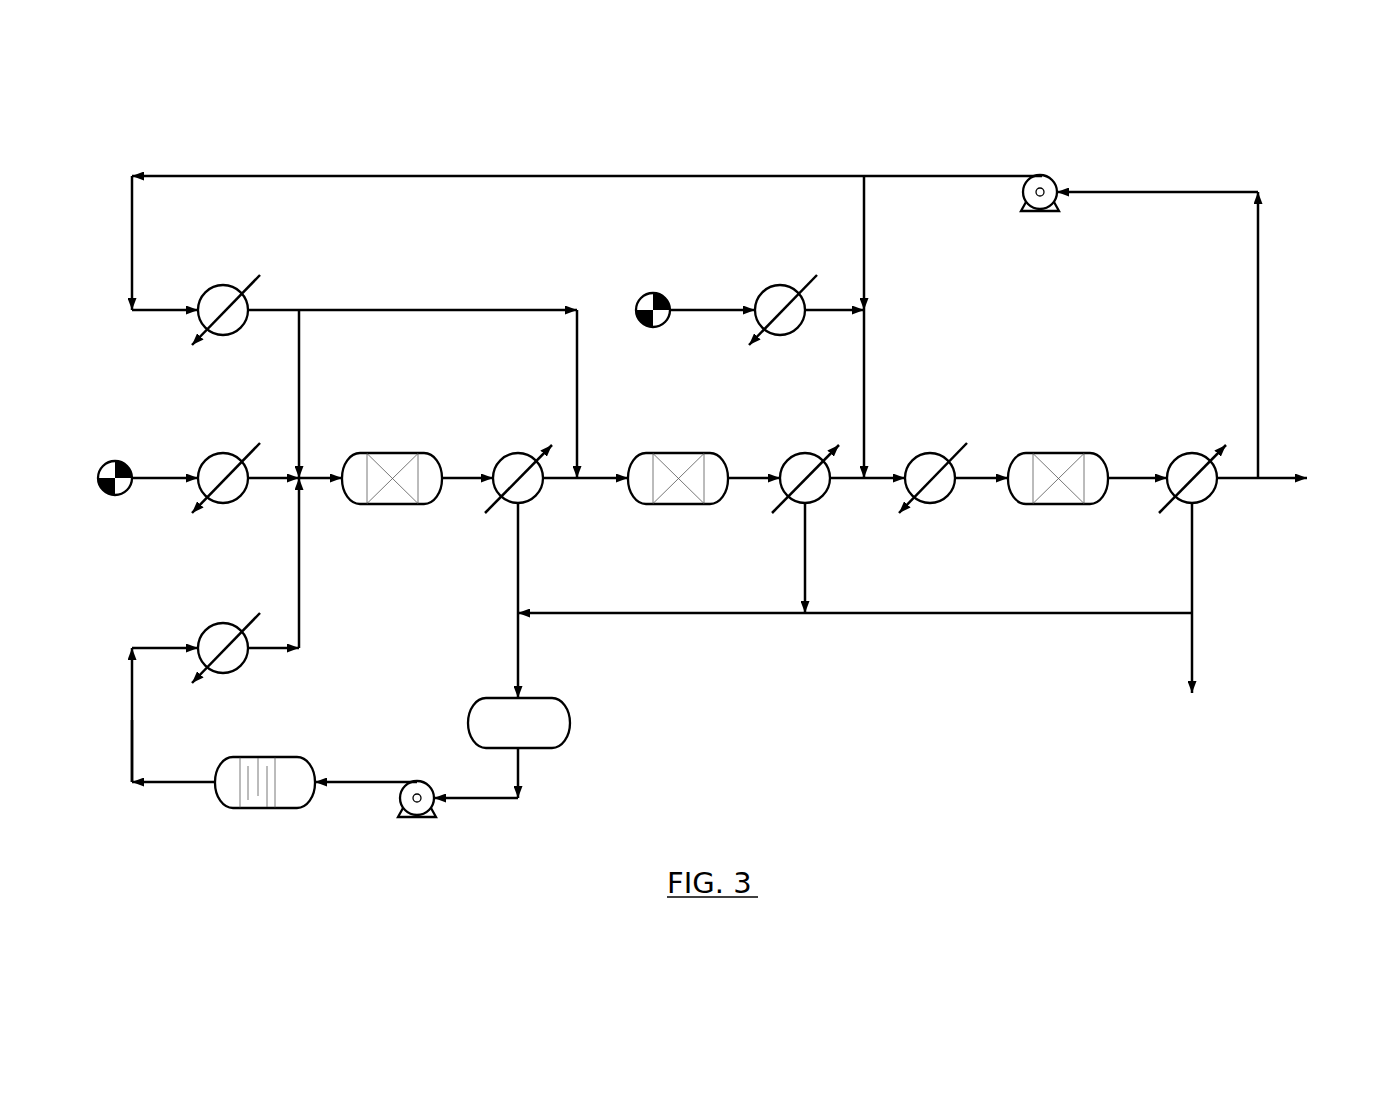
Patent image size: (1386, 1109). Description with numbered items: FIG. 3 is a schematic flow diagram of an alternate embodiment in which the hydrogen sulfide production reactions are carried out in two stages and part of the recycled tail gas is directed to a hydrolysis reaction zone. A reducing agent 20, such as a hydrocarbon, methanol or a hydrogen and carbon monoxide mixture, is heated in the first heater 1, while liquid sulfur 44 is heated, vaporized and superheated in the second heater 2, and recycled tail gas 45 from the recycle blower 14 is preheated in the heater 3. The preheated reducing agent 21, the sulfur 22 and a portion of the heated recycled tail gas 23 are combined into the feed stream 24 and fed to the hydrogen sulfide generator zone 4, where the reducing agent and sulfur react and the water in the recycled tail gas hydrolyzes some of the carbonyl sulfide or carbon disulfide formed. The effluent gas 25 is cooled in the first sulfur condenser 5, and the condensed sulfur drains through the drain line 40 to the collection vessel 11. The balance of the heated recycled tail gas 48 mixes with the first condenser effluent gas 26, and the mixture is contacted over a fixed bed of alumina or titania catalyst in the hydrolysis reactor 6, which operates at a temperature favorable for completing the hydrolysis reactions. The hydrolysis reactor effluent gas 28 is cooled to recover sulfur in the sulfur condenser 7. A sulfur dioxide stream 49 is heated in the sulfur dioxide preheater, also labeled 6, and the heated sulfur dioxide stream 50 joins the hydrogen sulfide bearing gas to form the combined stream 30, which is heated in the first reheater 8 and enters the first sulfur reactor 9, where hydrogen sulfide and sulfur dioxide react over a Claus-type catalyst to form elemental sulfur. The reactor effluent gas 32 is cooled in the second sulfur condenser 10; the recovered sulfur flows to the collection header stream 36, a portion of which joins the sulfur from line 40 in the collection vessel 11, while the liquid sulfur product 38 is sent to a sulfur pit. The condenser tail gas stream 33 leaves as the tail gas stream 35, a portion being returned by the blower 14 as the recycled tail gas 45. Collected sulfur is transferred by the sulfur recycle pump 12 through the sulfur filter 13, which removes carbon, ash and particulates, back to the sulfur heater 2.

The first heater 1 is at (203, 454).
The second heater 2 is at (204, 625).
The third heater 3 is at (204, 287).
The H2S generator zone 4 is at (357, 451).
The No. 1 sulfur condenser 5 is at (498, 457).
The hydrolysis reactor 6 is at (643, 450).
The sulfur condenser 7 is at (785, 457).
The No. 1 reheater 8 is at (910, 457).
The No. 1 sulfur reactor 9 is at (1023, 451).
The No. 2 sulfur condenser 10 is at (1172, 457).
The collection vessel 11 is at (484, 696).
The sulfur recycle pump 12 is at (430, 784).
The sulfur filter 13 is at (232, 756).
The recycle blower 14 is at (1054, 177).
The reducing agent 20 is at (166, 478).
The preheated reducing agent 21 is at (258, 478).
The sulfur 22 is at (299, 580).
The recycled tail gas 23 is at (299, 395).
The feed stream 24 is at (317, 478).
The effluent gas 25 is at (468, 478).
The H2S stream 26 is at (560, 478).
The hydrolysis reactor effluent gas 28 is at (755, 478).
The combined stream 30 is at (882, 478).
The No. 1 sulfur reactor effluent gas 32 is at (1133, 478).
The No. 2 sulfur condenser tail gas stream 33 is at (1240, 478).
The tail gas stream 35 is at (1283, 478).
The collection header stream 36 is at (1192, 580).
The liquid sulfur product 38 is at (1192, 663).
The drain line 40 is at (518, 580).
The liquid sulfur 44 is at (132, 715).
The recycled tail gas 45 is at (957, 176).
The heated recycled tail gas 48 is at (418, 310).
The sulfur dioxide stream 49 is at (703, 310).
The heated SO2 stream 50 is at (838, 310).